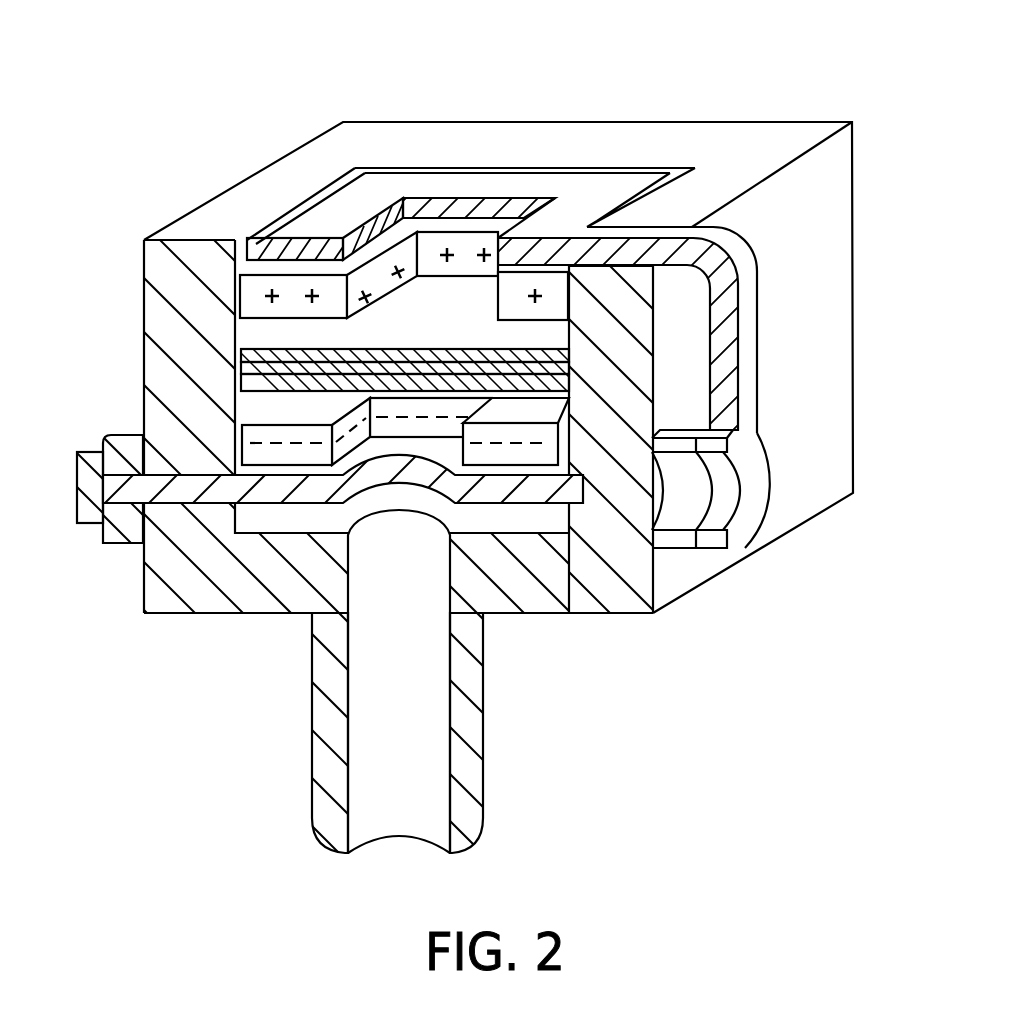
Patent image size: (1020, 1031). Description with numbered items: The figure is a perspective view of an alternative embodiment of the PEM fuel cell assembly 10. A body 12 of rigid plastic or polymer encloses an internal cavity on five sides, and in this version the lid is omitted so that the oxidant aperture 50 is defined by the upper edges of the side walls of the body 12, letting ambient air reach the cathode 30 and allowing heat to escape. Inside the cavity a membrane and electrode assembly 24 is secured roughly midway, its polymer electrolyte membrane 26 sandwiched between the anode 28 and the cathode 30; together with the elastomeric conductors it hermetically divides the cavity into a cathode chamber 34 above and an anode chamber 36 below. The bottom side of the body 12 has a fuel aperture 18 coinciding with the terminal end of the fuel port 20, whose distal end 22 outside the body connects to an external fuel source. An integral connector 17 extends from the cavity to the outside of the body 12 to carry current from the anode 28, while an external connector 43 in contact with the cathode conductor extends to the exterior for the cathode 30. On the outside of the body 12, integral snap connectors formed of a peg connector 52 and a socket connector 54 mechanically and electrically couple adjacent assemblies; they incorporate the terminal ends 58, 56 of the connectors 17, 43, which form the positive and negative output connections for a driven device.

The PEM fuel cell assembly 10 is at (748, 90).
The body 12 is at (143, 272).
The integral connector 17 is at (135, 488).
The fuel aperture 18 is at (410, 552).
The fuel port 20 is at (430, 750).
The distal end 22 is at (375, 847).
The membrane and electrode assembly 24 is at (242, 362).
The polymer electrolyte membrane 26 is at (240, 350).
The anode 28 is at (250, 396).
The cathode 30 is at (262, 352).
The cathode chamber 34 is at (267, 272).
The anode chamber 36 is at (262, 473).
The external connector 43 is at (720, 238).
The oxidant aperture 50 is at (443, 240).
The peg connector 52 is at (680, 538).
The socket connector 54 is at (113, 535).
The terminal end 56 is at (725, 508).
The terminal end 58 is at (92, 517).